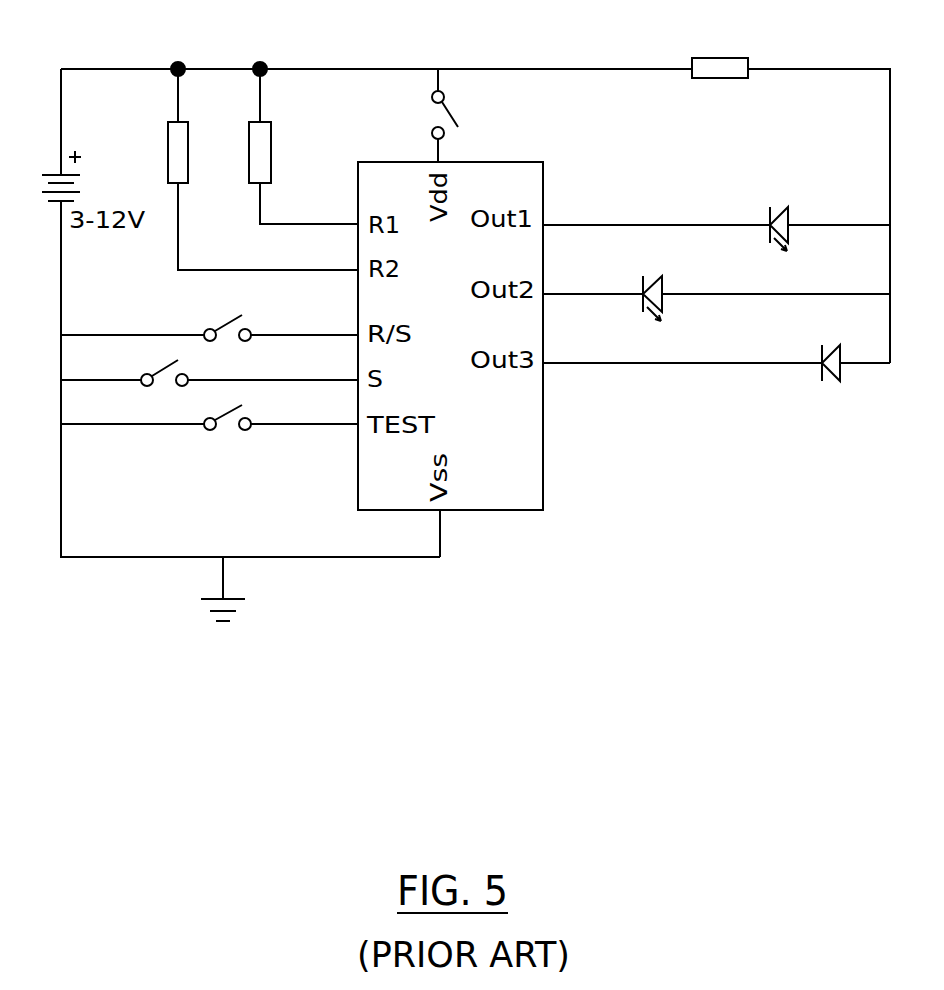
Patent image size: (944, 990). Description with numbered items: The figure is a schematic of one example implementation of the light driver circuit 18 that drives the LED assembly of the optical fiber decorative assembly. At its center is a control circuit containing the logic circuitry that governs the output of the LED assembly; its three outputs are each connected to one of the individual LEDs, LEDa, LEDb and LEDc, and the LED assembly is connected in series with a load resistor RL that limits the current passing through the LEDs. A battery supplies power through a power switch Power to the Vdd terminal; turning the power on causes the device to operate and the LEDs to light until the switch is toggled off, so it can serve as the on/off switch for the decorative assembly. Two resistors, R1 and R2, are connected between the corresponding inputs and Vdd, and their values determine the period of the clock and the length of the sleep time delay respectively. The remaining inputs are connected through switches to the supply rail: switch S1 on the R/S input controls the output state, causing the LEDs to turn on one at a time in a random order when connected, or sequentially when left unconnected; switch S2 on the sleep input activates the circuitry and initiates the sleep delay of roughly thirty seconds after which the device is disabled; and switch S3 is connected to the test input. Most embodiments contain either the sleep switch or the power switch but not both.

The light driver circuit 18 is at (528, 630).
The resistor R1 is at (303, 143).
The resistor R2 is at (263, 166).
The load resistor RL is at (720, 53).
The R/S switch S1 is at (209, 323).
The sleep switch S2 is at (209, 368).
The test switch S3 is at (209, 413).
The LED LEDa is at (716, 223).
The LED LEDb is at (648, 320).
The LED LEDc is at (716, 371).
The power switch Power is at (492, 115).